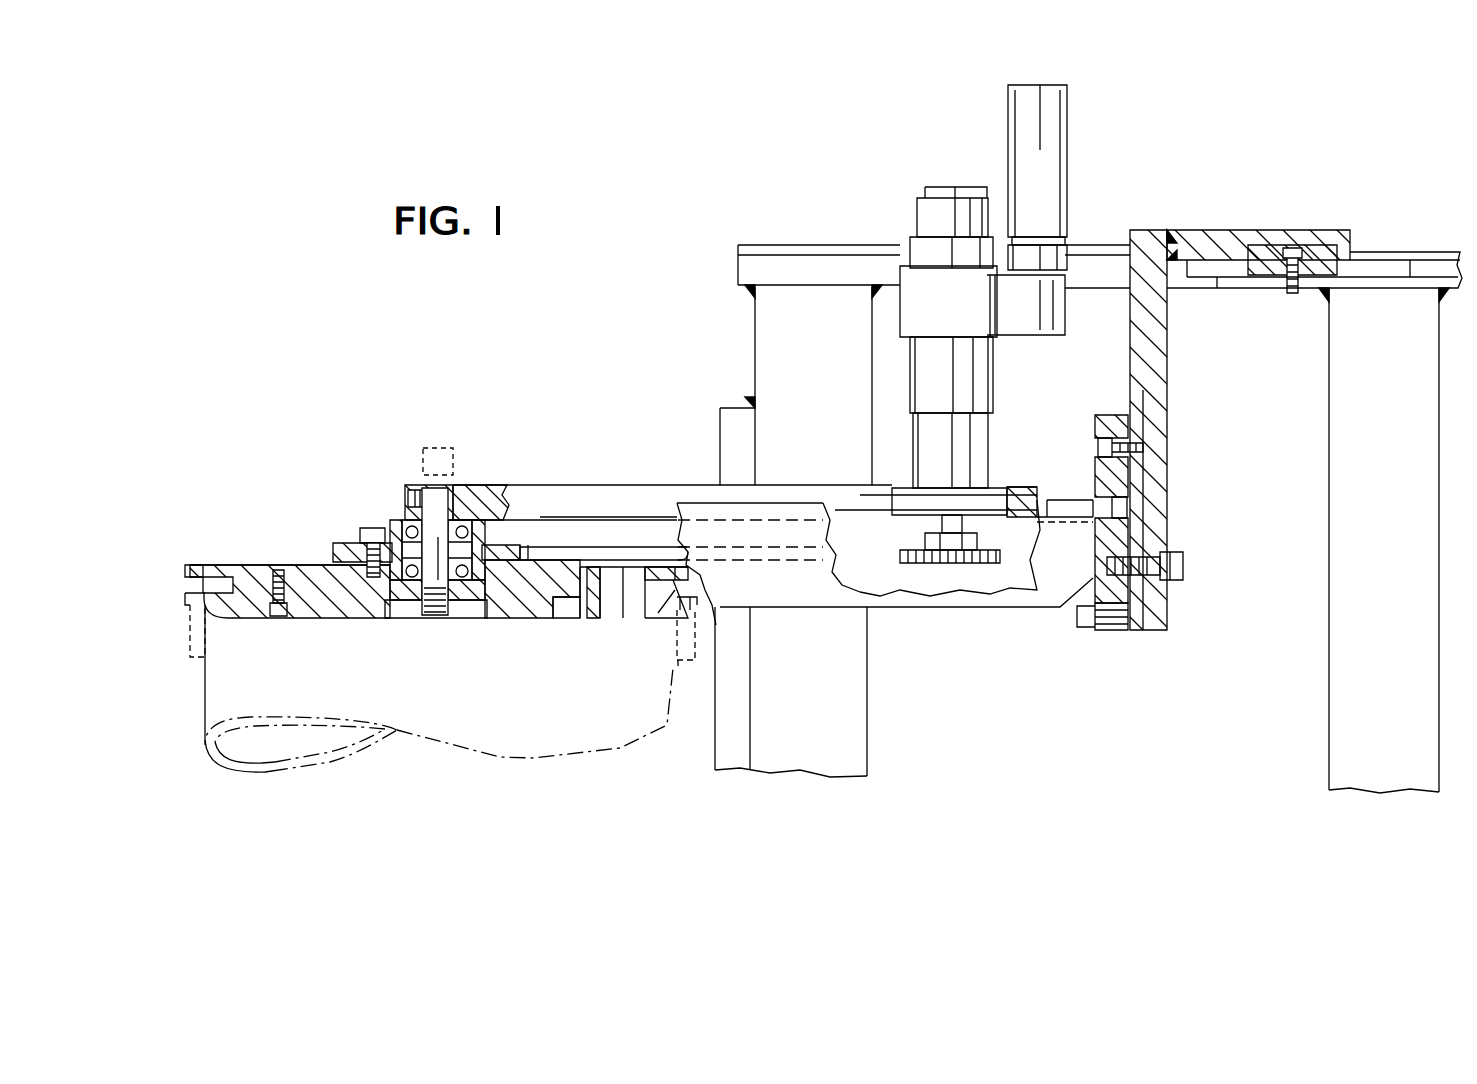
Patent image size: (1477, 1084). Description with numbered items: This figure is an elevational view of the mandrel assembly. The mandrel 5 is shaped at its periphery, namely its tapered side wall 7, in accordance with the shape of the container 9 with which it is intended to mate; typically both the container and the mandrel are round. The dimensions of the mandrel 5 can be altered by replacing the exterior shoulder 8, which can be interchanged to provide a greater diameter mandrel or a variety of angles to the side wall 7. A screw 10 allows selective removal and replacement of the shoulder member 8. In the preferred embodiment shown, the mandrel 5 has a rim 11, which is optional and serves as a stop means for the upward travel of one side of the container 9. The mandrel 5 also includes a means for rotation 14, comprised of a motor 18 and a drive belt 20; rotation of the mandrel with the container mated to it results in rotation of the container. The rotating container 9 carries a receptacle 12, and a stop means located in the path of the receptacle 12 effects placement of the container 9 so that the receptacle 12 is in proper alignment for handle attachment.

The mandrel 5 is at (218, 563).
The tapered side wall 7 is at (198, 587).
The exterior shoulder 8 is at (652, 607).
The container 9 is at (215, 693).
The screw 10 is at (278, 608).
The rim 11 is at (188, 575).
The receptacle 12 is at (190, 632).
The means for rotation 14 is at (962, 577).
The motor 18 is at (930, 215).
The drive belt 20 is at (883, 565).